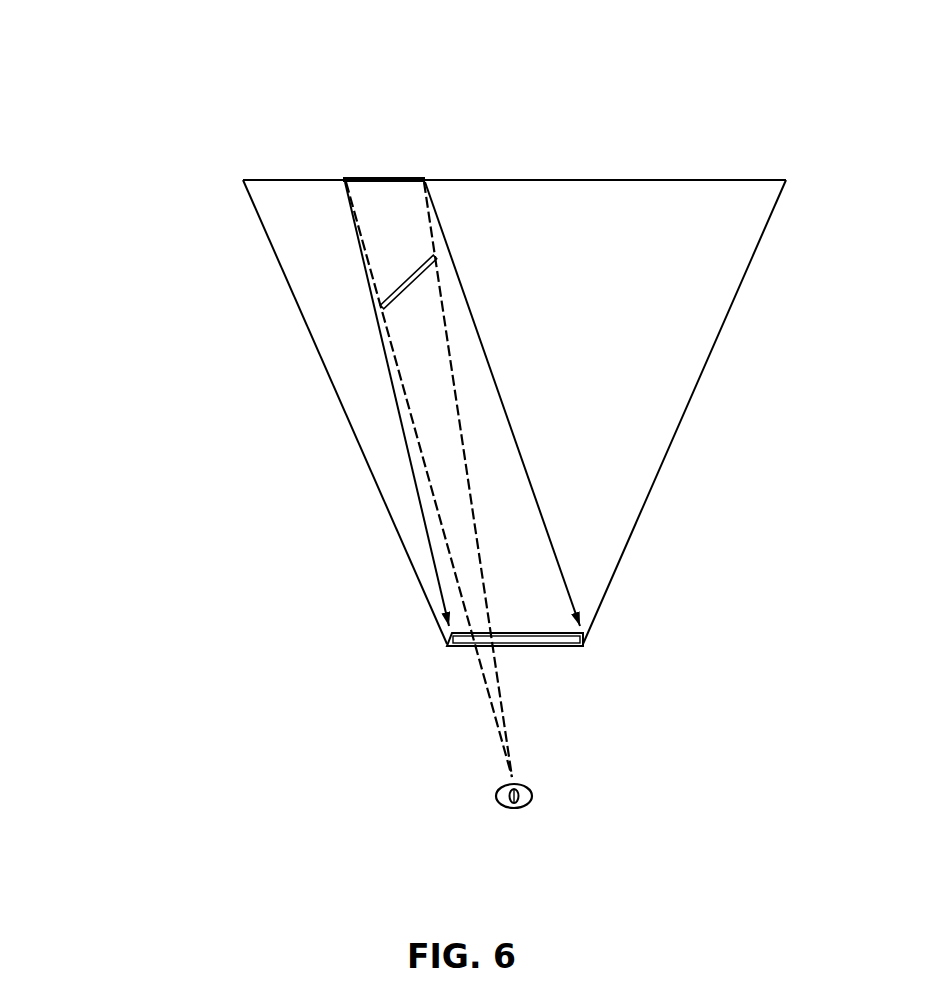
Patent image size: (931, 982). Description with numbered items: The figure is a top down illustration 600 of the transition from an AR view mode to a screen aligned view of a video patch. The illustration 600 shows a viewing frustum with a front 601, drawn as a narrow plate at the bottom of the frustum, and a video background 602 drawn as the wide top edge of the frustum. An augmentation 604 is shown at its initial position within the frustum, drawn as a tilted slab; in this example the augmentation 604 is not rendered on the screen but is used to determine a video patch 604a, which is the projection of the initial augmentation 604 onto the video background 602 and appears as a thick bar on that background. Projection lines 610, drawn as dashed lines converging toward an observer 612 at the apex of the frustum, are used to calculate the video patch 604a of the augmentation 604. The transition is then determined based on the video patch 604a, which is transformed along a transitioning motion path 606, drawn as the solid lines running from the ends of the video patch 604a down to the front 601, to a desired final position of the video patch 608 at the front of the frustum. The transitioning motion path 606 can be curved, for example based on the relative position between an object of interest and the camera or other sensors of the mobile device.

The top down illustration 600 is at (690, 62).
The front of the viewing frustum 601 is at (565, 645).
The video background 602 is at (240, 180).
The augmentation 604 is at (398, 277).
The video patch 604a is at (397, 160).
The transitioning motion path 606 is at (409, 485).
The desired final position of the video patch 608 is at (445, 640).
The projection lines 610 is at (489, 727).
The observer 612 is at (534, 797).